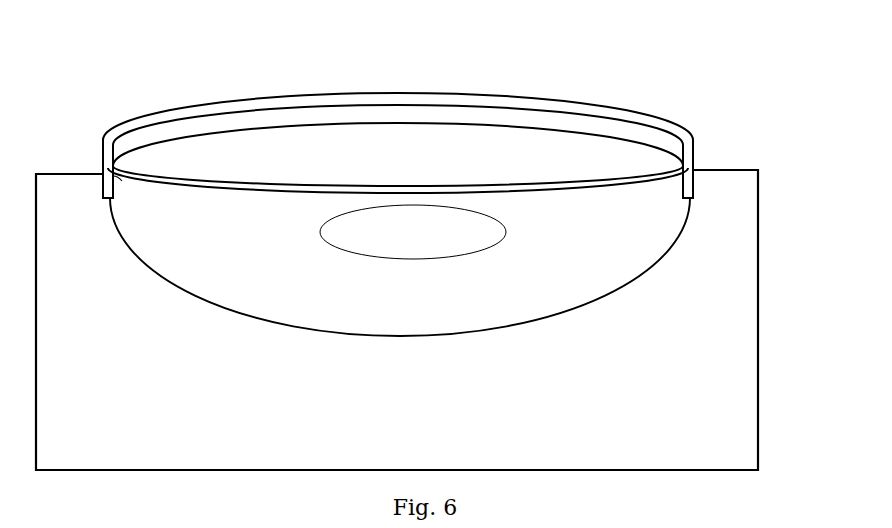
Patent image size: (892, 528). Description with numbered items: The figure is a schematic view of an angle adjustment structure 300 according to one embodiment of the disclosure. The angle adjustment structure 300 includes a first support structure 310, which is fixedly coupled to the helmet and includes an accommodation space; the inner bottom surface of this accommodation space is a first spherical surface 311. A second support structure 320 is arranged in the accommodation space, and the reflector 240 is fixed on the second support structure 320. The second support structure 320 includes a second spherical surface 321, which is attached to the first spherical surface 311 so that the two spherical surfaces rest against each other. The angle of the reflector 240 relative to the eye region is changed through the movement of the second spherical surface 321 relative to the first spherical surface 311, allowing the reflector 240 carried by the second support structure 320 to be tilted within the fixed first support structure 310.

The angle adjustment structure 300 is at (382, 172).
The first support structure 310 is at (726, 246).
The first spherical surface 311 is at (105, 214).
The second support structure 320 is at (688, 134).
The second spherical surface 321 is at (556, 99).
The reflector 240 is at (463, 152).